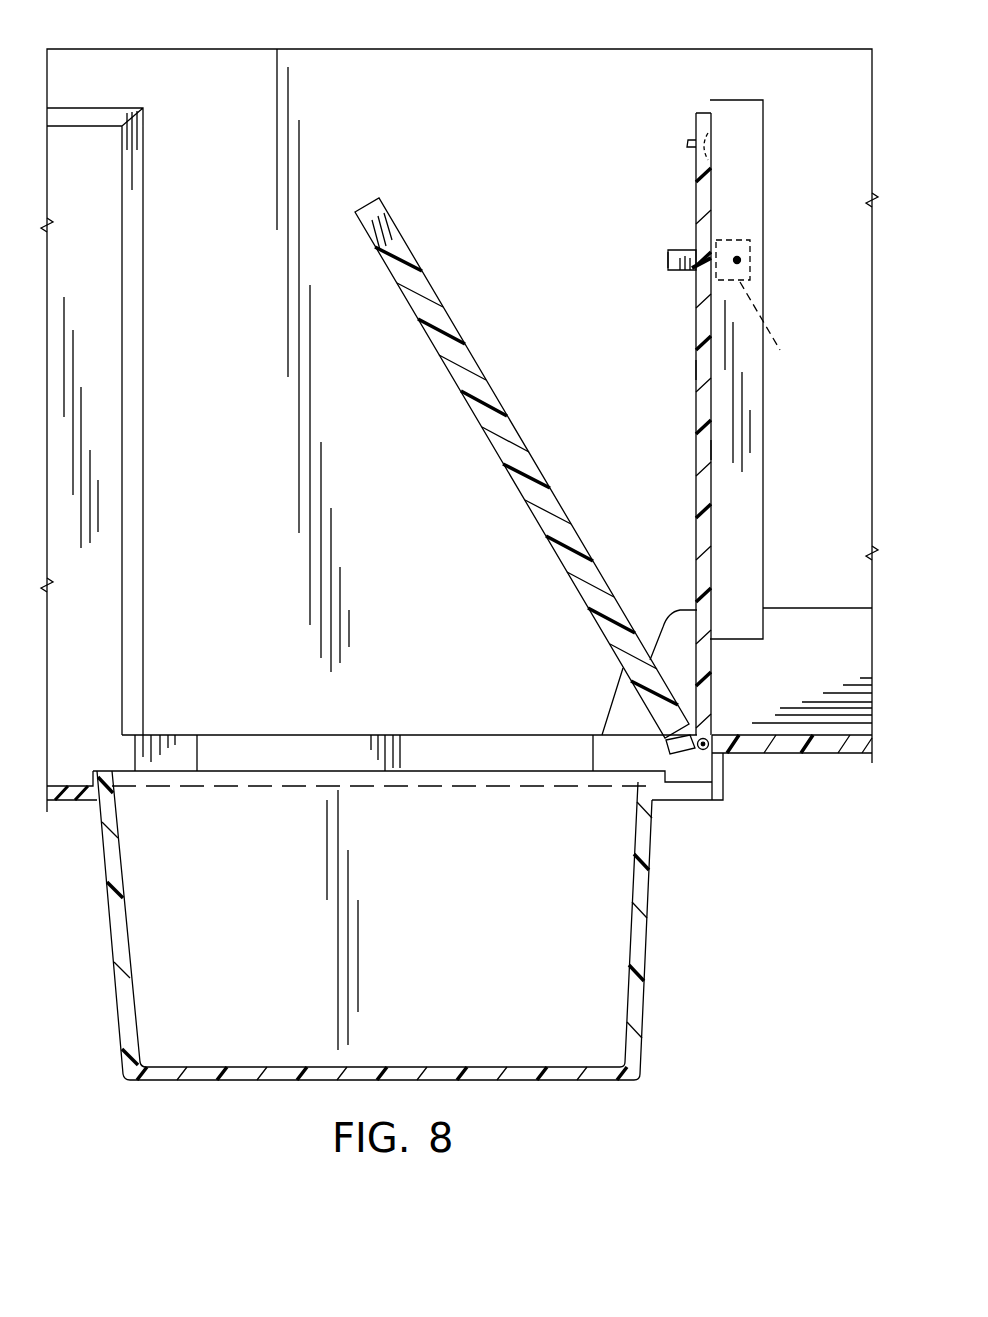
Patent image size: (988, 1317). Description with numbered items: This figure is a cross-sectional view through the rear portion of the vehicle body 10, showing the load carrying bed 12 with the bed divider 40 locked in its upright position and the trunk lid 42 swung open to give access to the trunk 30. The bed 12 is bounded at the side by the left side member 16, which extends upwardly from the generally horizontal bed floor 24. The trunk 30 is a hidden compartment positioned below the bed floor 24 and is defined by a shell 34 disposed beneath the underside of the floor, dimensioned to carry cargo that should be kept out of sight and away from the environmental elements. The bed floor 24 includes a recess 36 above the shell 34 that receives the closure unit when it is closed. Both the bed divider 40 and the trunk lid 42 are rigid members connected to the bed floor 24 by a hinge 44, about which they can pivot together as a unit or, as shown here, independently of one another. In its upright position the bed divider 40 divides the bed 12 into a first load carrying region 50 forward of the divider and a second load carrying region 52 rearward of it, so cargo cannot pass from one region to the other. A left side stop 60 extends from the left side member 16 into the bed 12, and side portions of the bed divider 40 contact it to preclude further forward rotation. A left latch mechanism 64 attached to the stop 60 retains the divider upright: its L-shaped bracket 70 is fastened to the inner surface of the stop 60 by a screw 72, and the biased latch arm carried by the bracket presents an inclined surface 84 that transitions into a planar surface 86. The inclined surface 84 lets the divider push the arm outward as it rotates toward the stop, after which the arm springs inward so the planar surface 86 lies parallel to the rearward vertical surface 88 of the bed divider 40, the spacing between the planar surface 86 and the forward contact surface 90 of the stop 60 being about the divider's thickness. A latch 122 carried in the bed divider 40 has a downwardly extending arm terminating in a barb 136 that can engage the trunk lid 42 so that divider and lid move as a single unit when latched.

The vehicle body 10 is at (665, 239).
The load carrying bed 12 is at (607, 88).
The left side member 16 is at (807, 77).
The bed floor 24 is at (816, 735).
The trunk 30 is at (257, 825).
The shell 34 is at (630, 930).
The recess 36 is at (684, 778).
The bed divider 40 is at (695, 409).
The trunk lid 42 is at (432, 266).
The hinge 44 is at (711, 749).
The first load carrying region 50 is at (847, 200).
The second load carrying region 52 is at (245, 215).
The left side stop 60 is at (766, 150).
The left latch mechanism 64 is at (671, 274).
The L-shaped bracket 70 is at (774, 329).
The screw 72 is at (737, 258).
The inclined surface 84 is at (690, 248).
The planar surface 86 is at (697, 262).
The rearward vertical surface 88 is at (695, 370).
The forward contact surface 90 is at (709, 452).
The latch 122 is at (690, 150).
The barb 136 is at (686, 142).